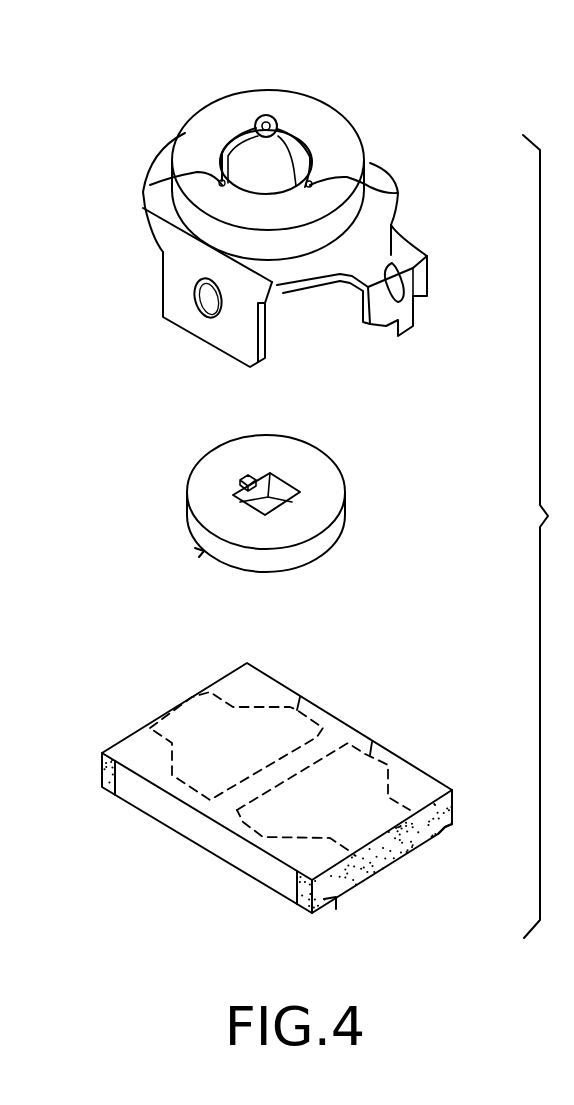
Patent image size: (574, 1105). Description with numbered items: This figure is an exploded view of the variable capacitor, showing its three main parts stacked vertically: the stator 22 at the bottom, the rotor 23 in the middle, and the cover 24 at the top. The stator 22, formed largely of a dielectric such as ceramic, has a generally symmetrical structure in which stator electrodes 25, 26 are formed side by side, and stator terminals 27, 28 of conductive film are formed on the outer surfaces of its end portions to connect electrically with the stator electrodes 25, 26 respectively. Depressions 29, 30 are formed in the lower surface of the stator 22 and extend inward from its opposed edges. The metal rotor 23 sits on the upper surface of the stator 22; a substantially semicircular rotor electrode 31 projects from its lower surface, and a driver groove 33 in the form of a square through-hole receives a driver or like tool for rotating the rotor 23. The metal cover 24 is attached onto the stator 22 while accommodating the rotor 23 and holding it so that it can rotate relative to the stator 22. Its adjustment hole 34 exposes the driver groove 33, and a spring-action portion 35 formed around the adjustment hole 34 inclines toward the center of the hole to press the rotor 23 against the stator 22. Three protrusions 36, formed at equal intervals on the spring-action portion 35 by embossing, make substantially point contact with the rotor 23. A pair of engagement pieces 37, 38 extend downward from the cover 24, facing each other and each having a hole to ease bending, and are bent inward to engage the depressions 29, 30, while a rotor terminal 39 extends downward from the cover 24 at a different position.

The stator 22 is at (121, 692).
The rotor 23 is at (162, 481).
The cover 24 is at (133, 133).
The stator electrode 25 is at (300, 697).
The stator electrode 26 is at (372, 743).
The stator terminal 27 is at (100, 772).
The stator terminal 28 is at (383, 863).
The depression 29 is at (325, 905).
The depression 30 is at (450, 837).
The rotor electrode 31 is at (198, 552).
The driver groove 33 is at (270, 483).
The adjustment hole 34 is at (233, 137).
The spring-action portion 35 is at (327, 147).
The protrusion 36 is at (265, 118).
The engagement piece 37 is at (180, 312).
The engagement piece 38 is at (303, 137).
The rotor terminal 39 is at (402, 320).